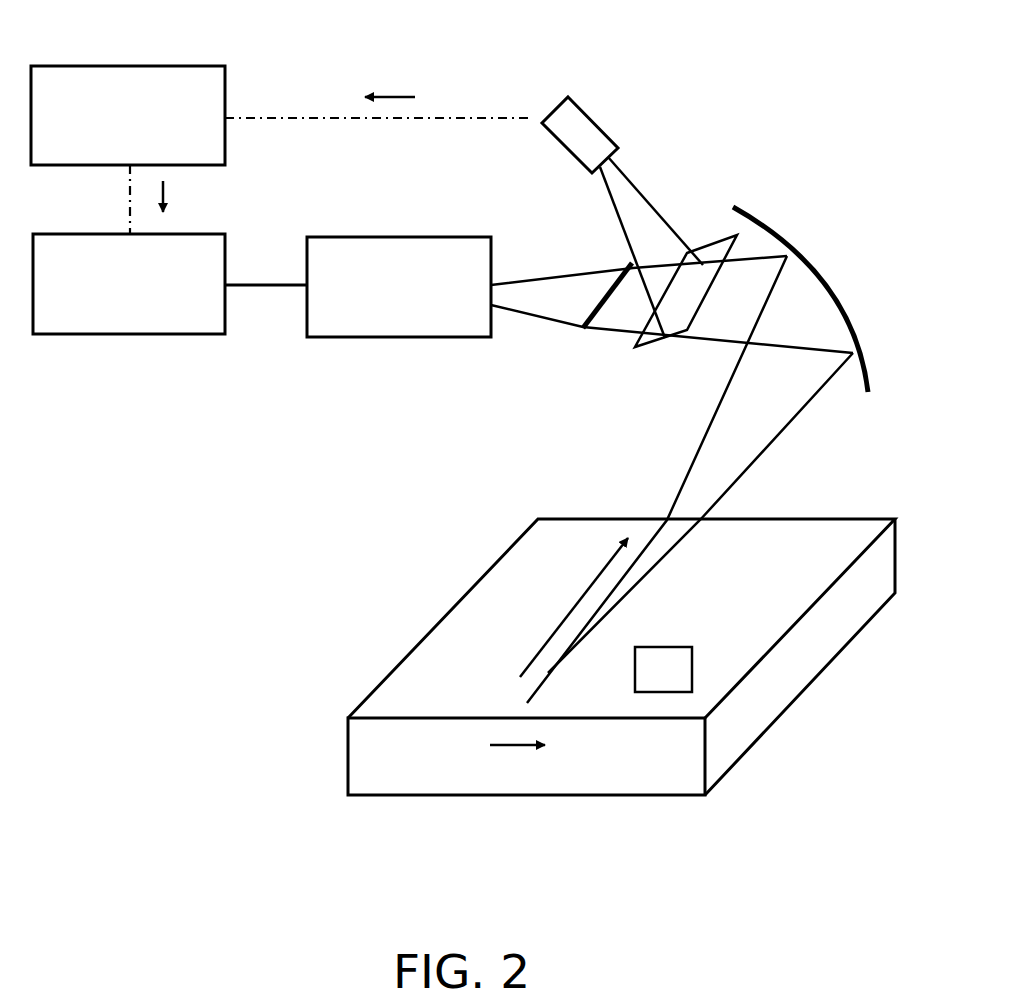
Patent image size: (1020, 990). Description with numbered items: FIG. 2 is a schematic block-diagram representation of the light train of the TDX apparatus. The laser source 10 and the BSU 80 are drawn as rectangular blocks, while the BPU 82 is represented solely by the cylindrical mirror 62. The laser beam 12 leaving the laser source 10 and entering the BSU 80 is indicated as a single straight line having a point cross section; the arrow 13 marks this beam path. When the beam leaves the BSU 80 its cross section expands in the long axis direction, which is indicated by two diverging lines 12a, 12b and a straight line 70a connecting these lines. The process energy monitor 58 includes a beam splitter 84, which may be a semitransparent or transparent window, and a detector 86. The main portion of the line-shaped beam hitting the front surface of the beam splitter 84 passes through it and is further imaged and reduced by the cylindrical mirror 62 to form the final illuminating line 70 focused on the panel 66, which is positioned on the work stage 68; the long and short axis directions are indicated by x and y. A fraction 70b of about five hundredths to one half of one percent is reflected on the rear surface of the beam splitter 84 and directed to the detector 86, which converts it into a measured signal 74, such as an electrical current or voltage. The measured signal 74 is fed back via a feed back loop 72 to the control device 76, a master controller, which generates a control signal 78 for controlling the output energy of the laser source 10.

The laser source 10 is at (72, 233).
The laser beam 12 is at (250, 290).
The diverging line 12a is at (552, 278).
The diverging line 12b is at (532, 318).
The beam direction arrow 13 is at (292, 283).
The process energy monitor 58 is at (672, 175).
The cylindrical mirror 62 is at (760, 223).
The panel 66 is at (663, 669).
The work stage 68 is at (740, 740).
The illuminating line 70 is at (578, 638).
The straight line 70a is at (607, 310).
The fraction 70b is at (632, 210).
The feed back loop 72 is at (128, 217).
The measured signal 74 is at (397, 97).
The control device 76 is at (143, 65).
The control signal 78 is at (166, 192).
The BSU 80 is at (397, 237).
The BPU 82 is at (847, 260).
The beam splitter 84 is at (635, 348).
The detector 86 is at (593, 125).